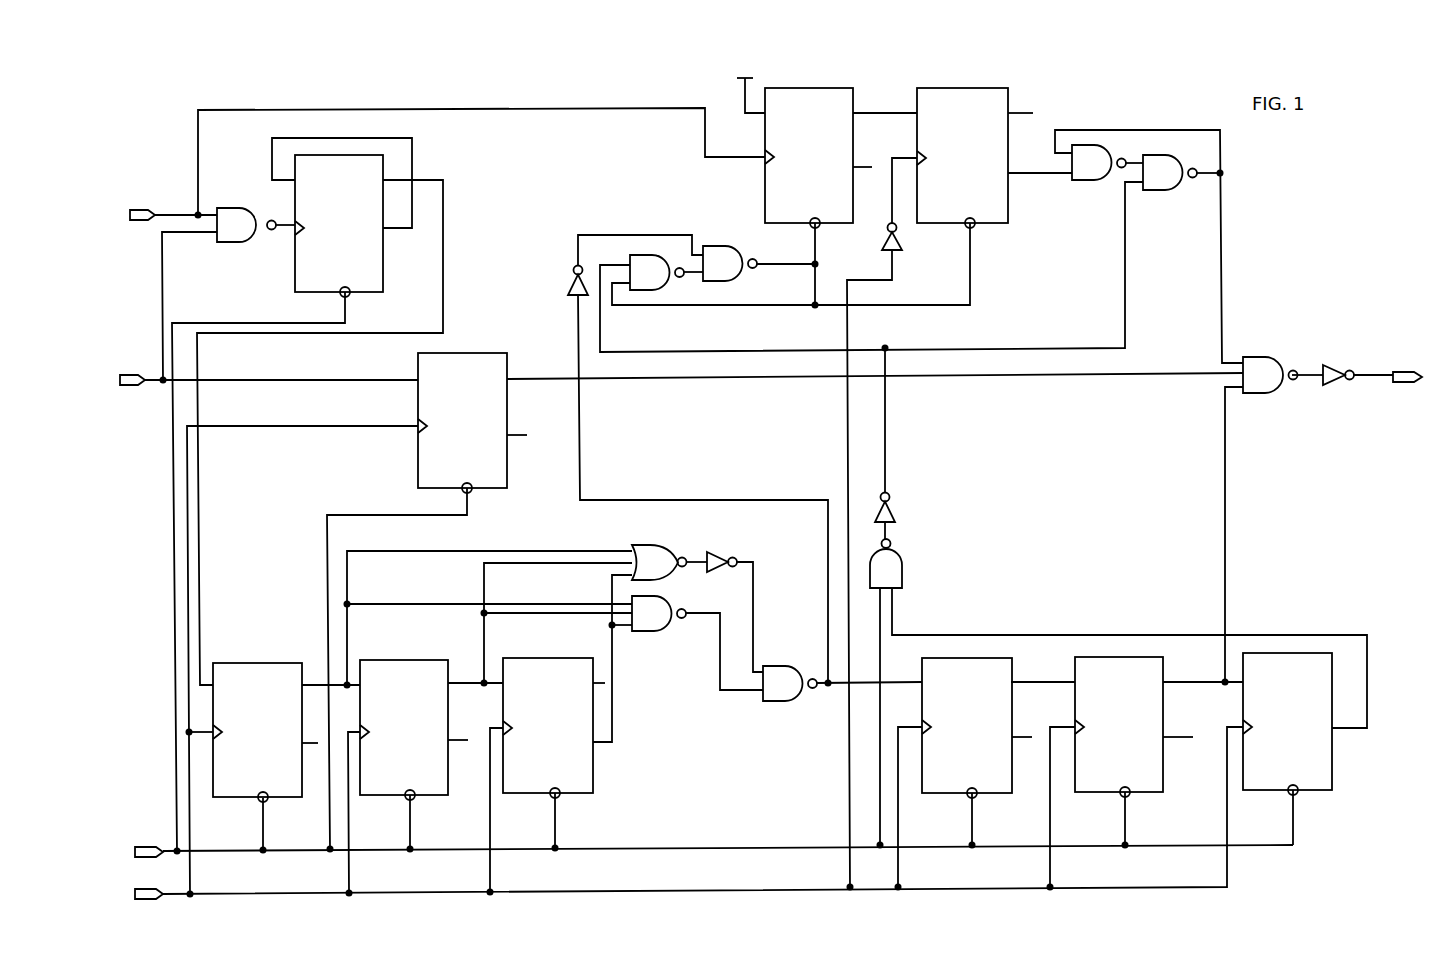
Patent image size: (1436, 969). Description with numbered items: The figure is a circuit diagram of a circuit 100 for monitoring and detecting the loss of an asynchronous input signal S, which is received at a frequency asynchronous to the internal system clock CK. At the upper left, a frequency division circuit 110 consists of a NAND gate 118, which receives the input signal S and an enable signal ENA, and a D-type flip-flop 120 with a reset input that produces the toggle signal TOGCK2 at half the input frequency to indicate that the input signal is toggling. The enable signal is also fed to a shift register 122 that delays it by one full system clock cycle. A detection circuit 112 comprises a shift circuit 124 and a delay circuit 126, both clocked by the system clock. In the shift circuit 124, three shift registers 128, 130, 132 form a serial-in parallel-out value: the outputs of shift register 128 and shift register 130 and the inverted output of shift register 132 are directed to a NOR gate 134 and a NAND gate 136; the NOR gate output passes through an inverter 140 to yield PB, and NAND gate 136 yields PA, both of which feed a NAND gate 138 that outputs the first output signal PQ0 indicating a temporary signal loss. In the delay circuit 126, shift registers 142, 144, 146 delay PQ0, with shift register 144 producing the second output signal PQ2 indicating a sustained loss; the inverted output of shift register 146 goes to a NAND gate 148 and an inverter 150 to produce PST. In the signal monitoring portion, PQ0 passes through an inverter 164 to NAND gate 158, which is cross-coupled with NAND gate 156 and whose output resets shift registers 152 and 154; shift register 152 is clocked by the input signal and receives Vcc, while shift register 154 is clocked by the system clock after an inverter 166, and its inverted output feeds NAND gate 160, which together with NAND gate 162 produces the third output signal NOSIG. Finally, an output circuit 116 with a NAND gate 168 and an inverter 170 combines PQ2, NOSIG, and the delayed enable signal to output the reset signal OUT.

The circuit 100 is at (226, 86).
The frequency division circuit 110 is at (427, 145).
The detection circuit 112 is at (162, 547).
The output circuit 116 is at (1317, 342).
The NAND gate 118 is at (238, 207).
The D-type flip-flop 120 is at (372, 292).
The shift register 122 is at (471, 354).
The shift circuit 124 is at (614, 490).
The delay circuit 126 is at (1109, 624).
The shift register 128 is at (278, 798).
The shift register 130 is at (430, 796).
The shift register 132 is at (580, 794).
The NOR gate 134 is at (653, 545).
The NAND gate 136 is at (645, 632).
The NAND gate 138 is at (784, 666).
The inverter 140 is at (724, 553).
The shift register 142 is at (990, 790).
The shift register 144 is at (1085, 785).
The shift register 146 is at (1313, 790).
The NAND gate 148 is at (904, 573).
The inverter 150 is at (896, 512).
The shift register 152 is at (822, 95).
The shift register 154 is at (982, 95).
The NAND gate 156 is at (661, 288).
The NAND gate 158 is at (723, 246).
The NAND gate 160 is at (1086, 181).
The NAND gate 162 is at (1167, 191).
The inverter 164 is at (569, 292).
The inverter 166 is at (884, 240).
The NAND gate 168 is at (1263, 393).
The inverter 170 is at (1333, 386).